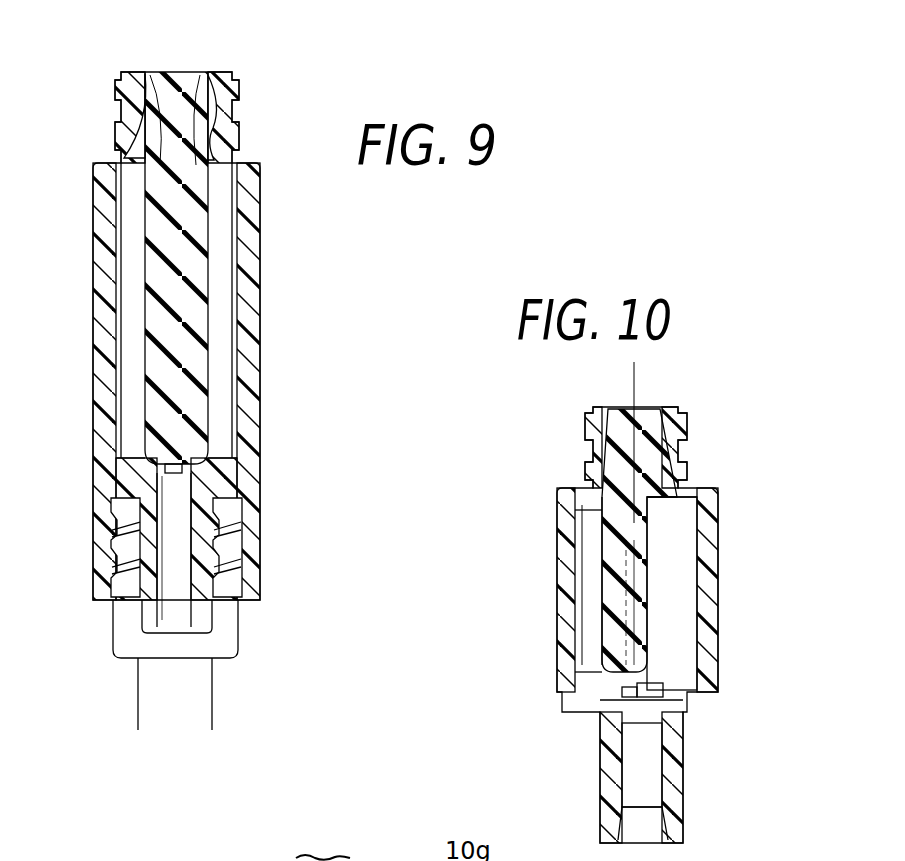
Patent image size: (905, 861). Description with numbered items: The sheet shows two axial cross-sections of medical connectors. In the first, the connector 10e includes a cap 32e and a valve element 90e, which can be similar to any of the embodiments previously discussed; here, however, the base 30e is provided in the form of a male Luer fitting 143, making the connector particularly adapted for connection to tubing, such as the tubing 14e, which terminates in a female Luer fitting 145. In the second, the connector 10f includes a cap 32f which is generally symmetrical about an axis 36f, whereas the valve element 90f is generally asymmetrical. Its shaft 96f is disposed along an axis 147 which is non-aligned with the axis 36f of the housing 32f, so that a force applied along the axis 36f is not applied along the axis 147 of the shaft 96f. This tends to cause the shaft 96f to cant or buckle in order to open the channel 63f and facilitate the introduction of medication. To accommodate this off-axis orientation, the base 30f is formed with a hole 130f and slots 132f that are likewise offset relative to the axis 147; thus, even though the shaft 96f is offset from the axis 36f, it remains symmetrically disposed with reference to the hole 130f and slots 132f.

In FIG. 9, the connector 10e is at (284, 114).
In FIG. 9, the valve element 90e is at (195, 278).
In FIG. 9, the cap 32e is at (258, 333).
In FIG. 9, the base 30e is at (263, 496).
In FIG. 9, the male Luer fitting 143 is at (270, 580).
In FIG. 9, the female Luer fitting 145 is at (240, 641).
In FIG. 9, the tubing 14e is at (210, 708).
In FIG. 10, the connector 10f is at (656, 602).
In FIG. 10, the axis 36f is at (637, 379).
In FIG. 10, the shaft 96f is at (613, 548).
In FIG. 10, the channel 63f is at (662, 556).
In FIG. 10, the valve element 90f is at (684, 540).
In FIG. 10, the cap 32f is at (736, 569).
In FIG. 10, the axis 147 is at (647, 593).
In FIG. 10, the slots 132f is at (640, 692).
In FIG. 10, the hole 130f is at (715, 688).
In FIG. 10, the base 30f is at (703, 749).